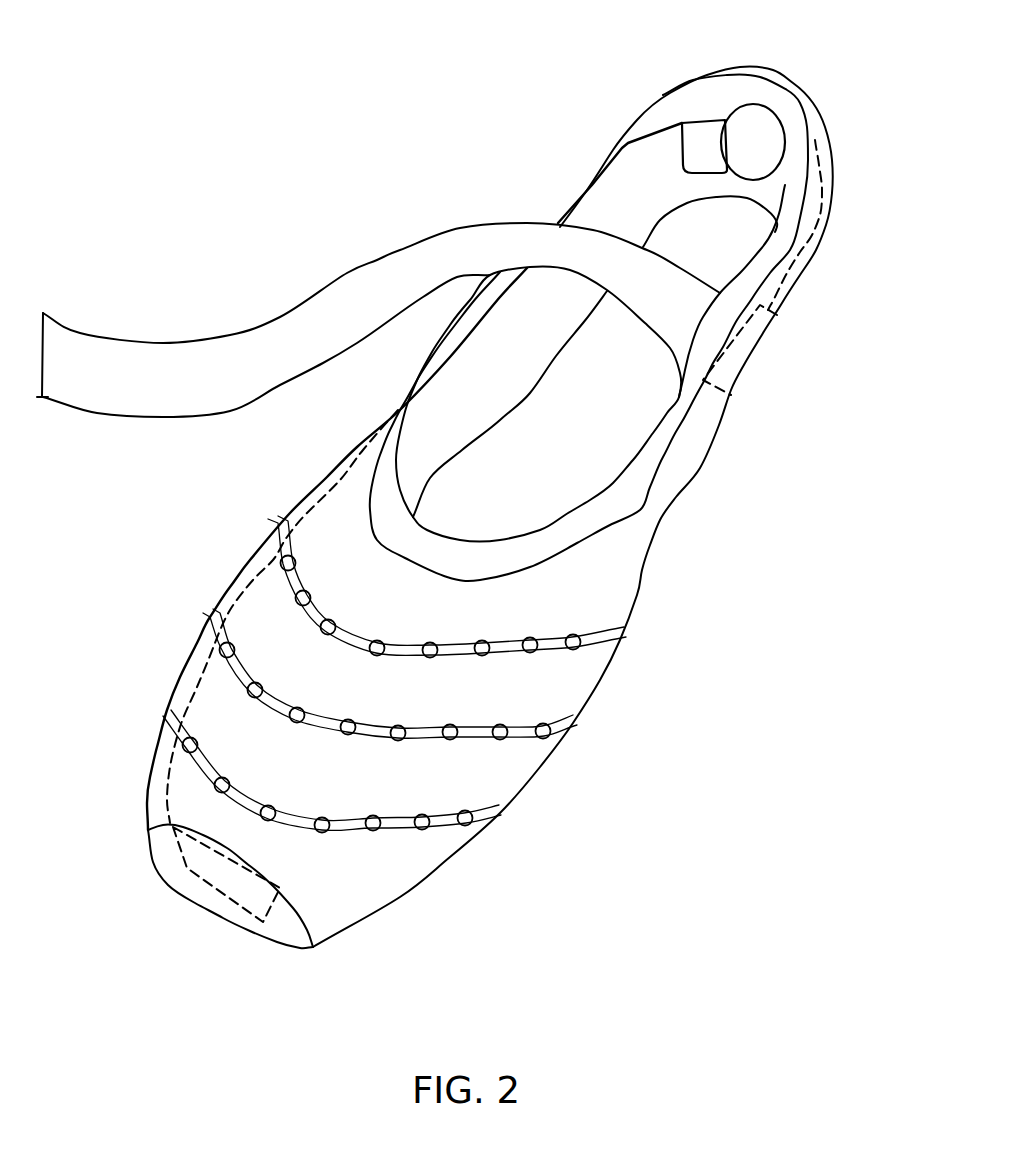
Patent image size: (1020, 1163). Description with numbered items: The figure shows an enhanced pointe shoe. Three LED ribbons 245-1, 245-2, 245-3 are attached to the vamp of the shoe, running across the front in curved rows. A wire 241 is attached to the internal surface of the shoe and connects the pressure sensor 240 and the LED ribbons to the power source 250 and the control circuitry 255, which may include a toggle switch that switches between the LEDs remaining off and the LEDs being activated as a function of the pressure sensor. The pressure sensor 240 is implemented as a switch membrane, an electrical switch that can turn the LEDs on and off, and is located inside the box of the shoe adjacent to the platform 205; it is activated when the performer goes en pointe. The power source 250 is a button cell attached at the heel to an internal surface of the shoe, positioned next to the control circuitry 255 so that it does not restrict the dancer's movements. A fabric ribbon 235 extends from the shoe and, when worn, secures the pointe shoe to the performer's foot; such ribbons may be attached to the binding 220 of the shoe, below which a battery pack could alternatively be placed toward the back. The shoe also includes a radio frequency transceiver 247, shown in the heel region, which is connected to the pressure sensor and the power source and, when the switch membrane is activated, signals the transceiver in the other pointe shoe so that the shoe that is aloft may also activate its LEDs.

The platform 205 is at (293, 927).
The binding 220 is at (607, 500).
The fabric ribbon 235 is at (120, 400).
The pressure sensor 240 is at (230, 880).
The wire 241 is at (621, 148).
The LED ribbon 245-1 is at (403, 830).
The LED ribbon 245-2 is at (473, 737).
The LED ribbon 245-3 is at (553, 652).
The radio frequency transceiver 247 is at (727, 370).
The power source 250 is at (753, 133).
The control circuitry 255 is at (707, 135).